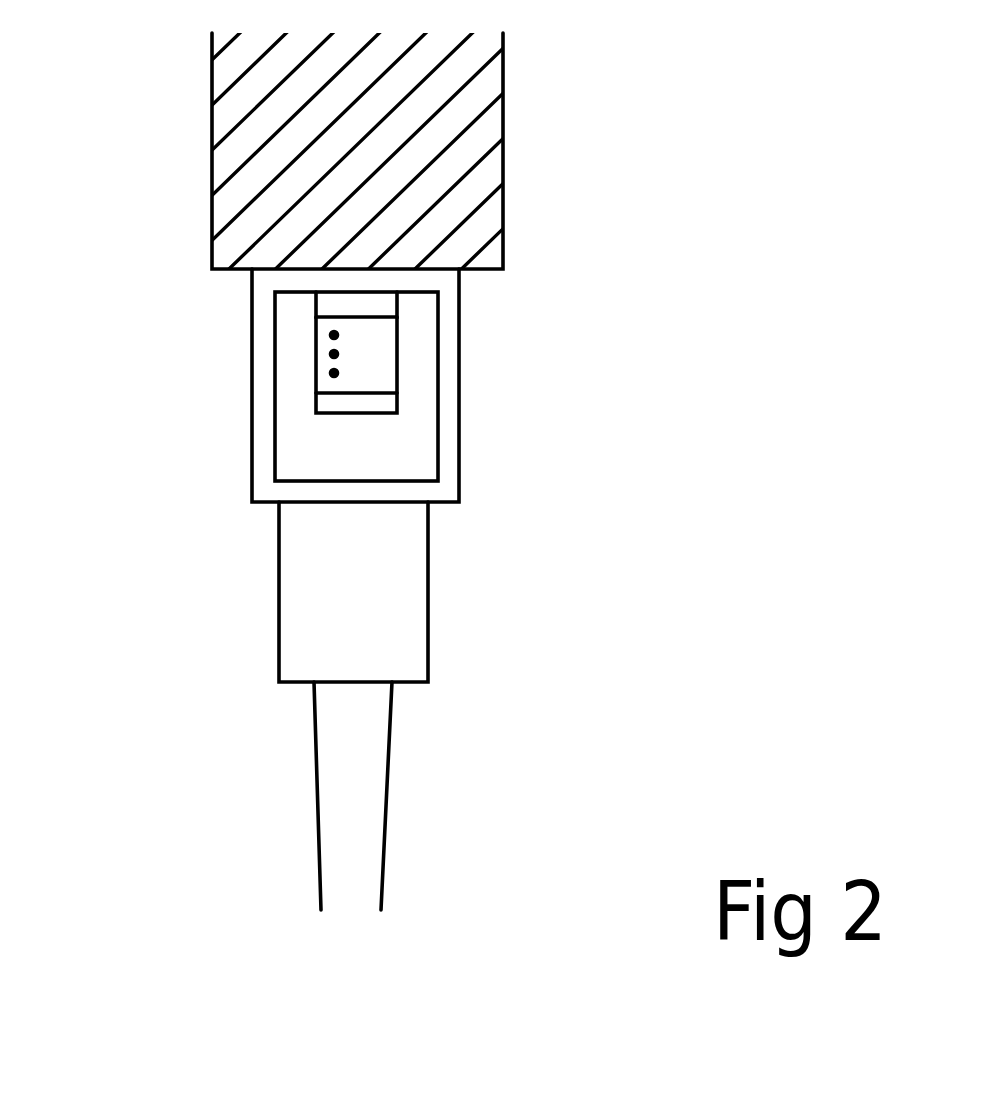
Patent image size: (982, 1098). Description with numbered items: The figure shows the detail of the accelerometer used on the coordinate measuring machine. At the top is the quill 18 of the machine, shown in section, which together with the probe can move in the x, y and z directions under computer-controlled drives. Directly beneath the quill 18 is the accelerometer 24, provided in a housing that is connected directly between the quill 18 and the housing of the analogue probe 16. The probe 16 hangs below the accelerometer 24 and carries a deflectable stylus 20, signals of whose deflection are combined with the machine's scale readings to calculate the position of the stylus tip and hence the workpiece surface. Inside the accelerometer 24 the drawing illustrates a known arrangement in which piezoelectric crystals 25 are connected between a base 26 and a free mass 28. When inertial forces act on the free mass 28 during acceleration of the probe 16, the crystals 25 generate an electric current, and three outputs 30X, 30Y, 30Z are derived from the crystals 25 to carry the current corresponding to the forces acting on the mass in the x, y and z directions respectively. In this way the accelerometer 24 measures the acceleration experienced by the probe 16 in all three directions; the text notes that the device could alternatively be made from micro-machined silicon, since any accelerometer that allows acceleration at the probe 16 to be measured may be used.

The analogue probe 16 is at (402, 639).
The quill 18 is at (493, 70).
The deflectable stylus 20 is at (366, 872).
The accelerometer 24 is at (240, 499).
The piezoelectric crystals 25 is at (385, 359).
The base 26 is at (382, 303).
The free mass 28 is at (385, 403).
The output 30X is at (334, 335).
The output 30Y is at (334, 354).
The output 30Z is at (334, 373).